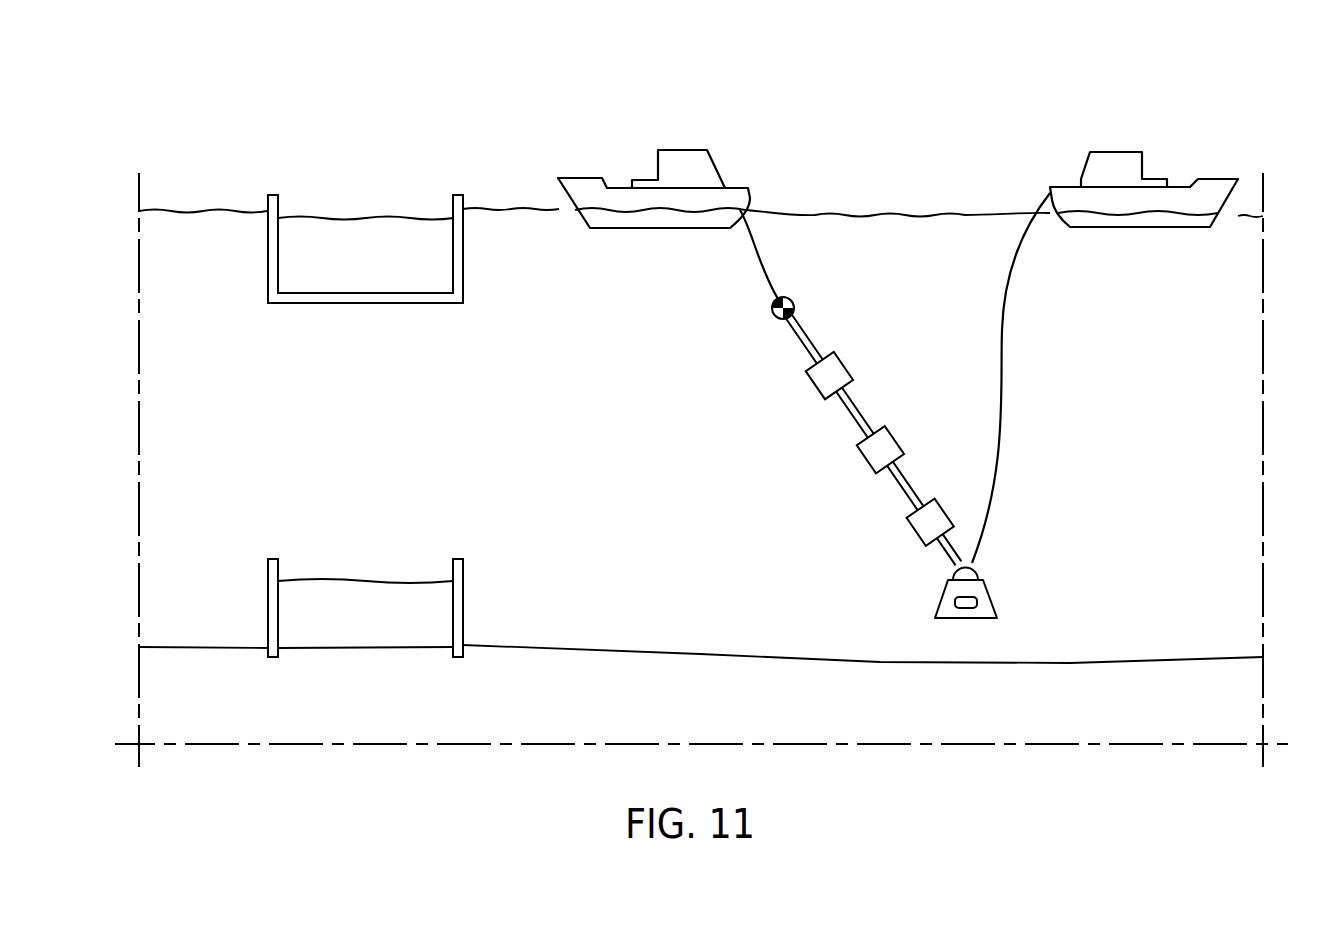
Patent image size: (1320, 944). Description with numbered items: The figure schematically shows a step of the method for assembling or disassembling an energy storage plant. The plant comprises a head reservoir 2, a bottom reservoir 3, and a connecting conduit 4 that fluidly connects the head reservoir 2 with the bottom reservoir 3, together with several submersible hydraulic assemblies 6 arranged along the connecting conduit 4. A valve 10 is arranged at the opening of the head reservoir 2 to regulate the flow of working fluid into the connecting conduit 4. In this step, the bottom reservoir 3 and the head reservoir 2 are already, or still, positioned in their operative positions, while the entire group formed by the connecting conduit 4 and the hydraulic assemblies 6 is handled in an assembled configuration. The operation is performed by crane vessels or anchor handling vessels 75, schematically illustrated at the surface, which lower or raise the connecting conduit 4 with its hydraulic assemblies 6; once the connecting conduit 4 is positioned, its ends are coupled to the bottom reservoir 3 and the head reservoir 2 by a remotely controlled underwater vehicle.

The anchor handling vessel 75 is at (714, 139).
The head reservoir 2 is at (268, 257).
The bottom reservoir 3 is at (268, 594).
The connecting conduit 4 is at (813, 346).
The submersible hydraulic assembly 6 is at (814, 393).
The valve 10 is at (773, 318).